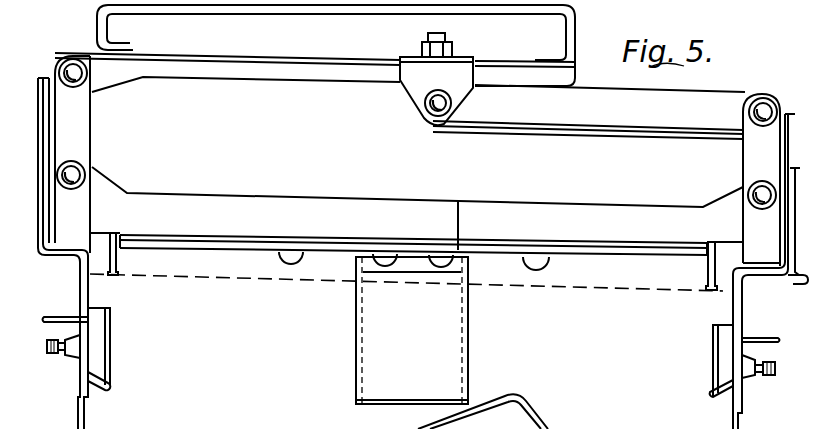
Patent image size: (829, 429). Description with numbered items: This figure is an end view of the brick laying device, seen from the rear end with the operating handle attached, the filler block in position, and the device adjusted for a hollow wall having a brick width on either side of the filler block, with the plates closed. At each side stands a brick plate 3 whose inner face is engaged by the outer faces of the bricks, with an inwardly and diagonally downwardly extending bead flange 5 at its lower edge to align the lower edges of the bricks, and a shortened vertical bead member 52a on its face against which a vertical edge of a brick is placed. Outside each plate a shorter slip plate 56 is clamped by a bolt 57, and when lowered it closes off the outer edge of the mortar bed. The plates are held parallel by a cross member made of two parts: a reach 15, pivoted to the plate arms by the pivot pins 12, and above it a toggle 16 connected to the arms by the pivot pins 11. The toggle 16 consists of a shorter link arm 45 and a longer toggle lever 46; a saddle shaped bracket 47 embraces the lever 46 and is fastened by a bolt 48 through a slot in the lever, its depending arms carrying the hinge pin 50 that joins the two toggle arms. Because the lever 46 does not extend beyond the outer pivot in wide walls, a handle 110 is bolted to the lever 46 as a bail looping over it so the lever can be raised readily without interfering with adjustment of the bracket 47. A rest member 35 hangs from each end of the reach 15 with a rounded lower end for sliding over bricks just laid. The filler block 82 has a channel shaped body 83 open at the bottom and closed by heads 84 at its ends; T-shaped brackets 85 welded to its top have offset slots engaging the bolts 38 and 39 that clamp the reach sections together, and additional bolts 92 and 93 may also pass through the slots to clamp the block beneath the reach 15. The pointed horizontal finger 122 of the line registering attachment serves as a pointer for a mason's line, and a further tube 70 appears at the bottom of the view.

The brick plate 3 is at (90, 322).
The bead flange 5 is at (110, 370).
The pivot pin 11 is at (70, 70).
The pivot pin 12 is at (76, 172).
The reach 15 is at (309, 197).
The toggle 16 is at (305, 93).
The rest member 35 is at (118, 265).
The bolt 38 is at (386, 258).
The bolt 39 is at (438, 258).
The link arm 45 is at (585, 124).
The toggle lever 46 is at (577, 72).
The saddle shaped bracket 47 is at (412, 87).
The bolt 48 is at (428, 45).
The hinge pin 50 is at (432, 113).
The vertical bead member 52a is at (100, 348).
The slip plate 56 is at (78, 427).
The bolt 57 is at (61, 356).
The tube handle 70 is at (446, 411).
The filler block 82 is at (354, 345).
The channel shaped body 83 is at (355, 380).
The head 84 is at (445, 358).
The bracket 85 is at (480, 251).
The bolt 92 is at (292, 258).
The bolt 93 is at (536, 262).
The handle 110 is at (230, 13).
The horizontal finger 122 is at (795, 284).